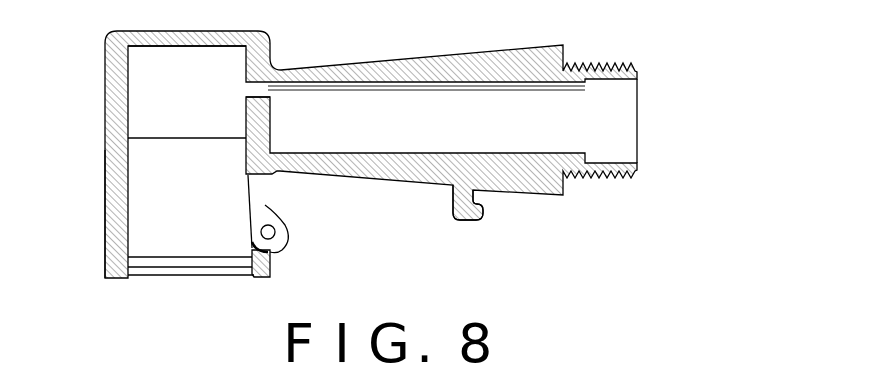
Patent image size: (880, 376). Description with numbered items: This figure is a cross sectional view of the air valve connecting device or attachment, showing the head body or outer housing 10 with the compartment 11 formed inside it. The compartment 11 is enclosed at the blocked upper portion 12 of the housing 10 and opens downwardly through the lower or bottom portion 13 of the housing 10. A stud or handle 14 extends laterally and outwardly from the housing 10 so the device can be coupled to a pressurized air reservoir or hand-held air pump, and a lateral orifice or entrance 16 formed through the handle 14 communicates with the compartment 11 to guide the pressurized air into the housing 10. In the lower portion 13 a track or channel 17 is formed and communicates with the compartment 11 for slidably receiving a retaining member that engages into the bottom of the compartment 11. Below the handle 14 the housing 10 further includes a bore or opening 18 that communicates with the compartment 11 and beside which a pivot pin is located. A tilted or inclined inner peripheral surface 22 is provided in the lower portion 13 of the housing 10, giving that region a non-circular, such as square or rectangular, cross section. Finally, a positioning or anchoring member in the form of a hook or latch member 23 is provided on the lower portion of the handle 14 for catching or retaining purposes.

The head body or outer housing 10 is at (105, 147).
The compartment 11 is at (152, 84).
The upper portion of the housing 12 is at (115, 42).
The lower or bottom portion of the housing 13 is at (108, 242).
The handle 14 is at (452, 68).
The lateral orifice or entrance 16 is at (262, 88).
The channel 17 is at (207, 263).
The opening 18 is at (258, 189).
The inclined inner peripheral surface 22 is at (178, 208).
The hook 23 is at (473, 222).